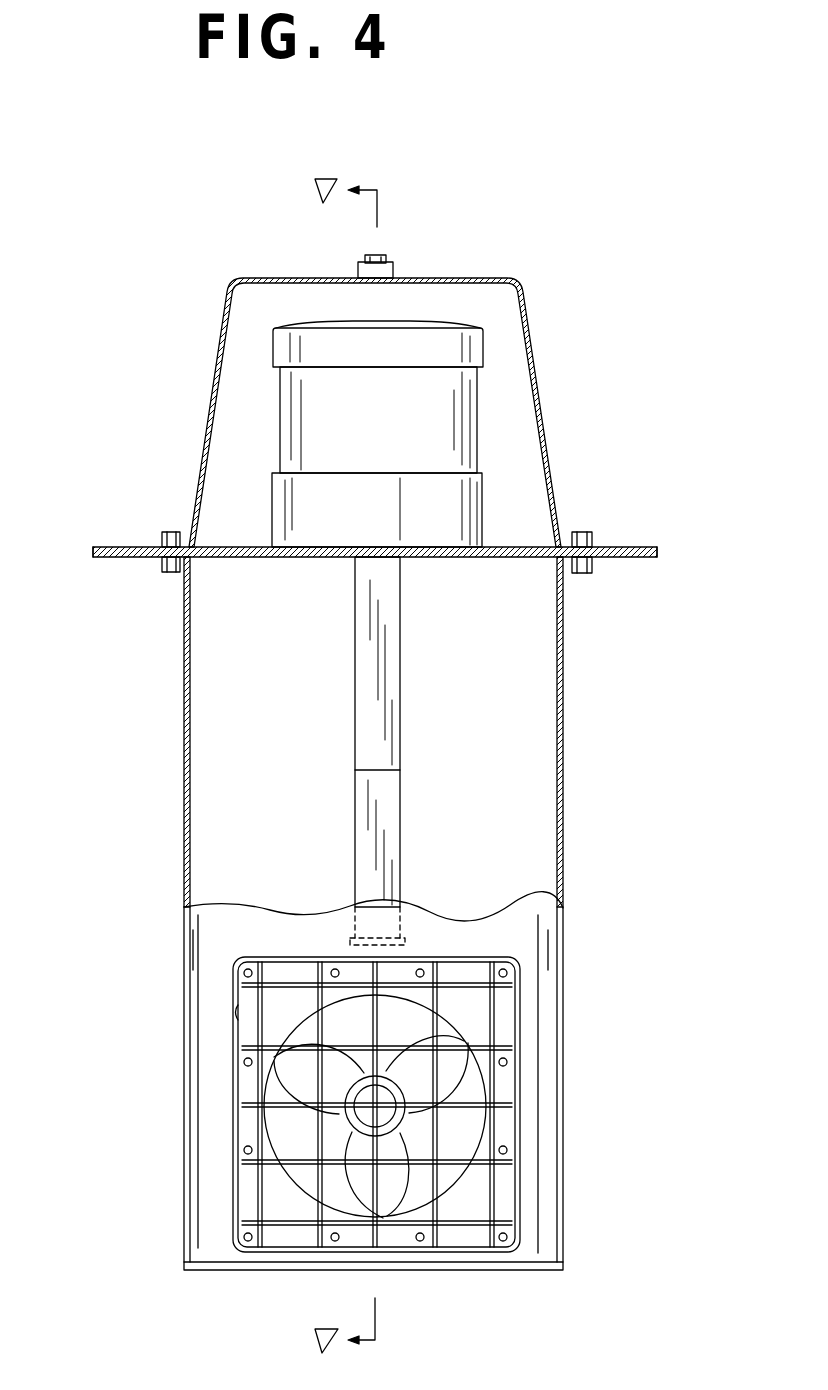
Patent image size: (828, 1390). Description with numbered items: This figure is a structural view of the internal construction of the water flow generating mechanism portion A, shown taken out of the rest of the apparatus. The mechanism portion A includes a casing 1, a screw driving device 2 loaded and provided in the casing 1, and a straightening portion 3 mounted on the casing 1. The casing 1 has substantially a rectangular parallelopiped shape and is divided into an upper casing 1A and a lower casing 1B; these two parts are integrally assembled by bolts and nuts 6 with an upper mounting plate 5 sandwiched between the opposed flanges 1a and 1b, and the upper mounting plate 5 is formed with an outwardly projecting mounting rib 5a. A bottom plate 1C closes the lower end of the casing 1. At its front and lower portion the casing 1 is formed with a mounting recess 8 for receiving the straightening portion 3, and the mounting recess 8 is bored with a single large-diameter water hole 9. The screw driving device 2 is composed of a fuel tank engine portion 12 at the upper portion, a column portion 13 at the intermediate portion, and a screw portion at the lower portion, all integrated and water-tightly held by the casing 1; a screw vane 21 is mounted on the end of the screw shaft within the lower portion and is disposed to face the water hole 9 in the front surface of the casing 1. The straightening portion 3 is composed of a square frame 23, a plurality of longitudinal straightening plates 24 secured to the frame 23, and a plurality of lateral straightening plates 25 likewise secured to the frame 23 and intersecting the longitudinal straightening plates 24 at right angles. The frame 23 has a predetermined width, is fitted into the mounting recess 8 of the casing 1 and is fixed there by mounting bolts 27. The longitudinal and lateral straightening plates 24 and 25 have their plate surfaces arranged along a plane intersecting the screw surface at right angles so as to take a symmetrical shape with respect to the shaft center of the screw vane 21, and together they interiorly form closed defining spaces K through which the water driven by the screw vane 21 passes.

The water flow generating mechanism portion A is at (123, 418).
The casing 1 is at (548, 403).
The upper casing 1A is at (203, 417).
The lower casing 1B is at (185, 778).
The bottom plate 1C is at (232, 1268).
The flange 1a is at (590, 542).
The flange 1b is at (594, 574).
The upper mounting plate 5 is at (242, 558).
The mounting rib 5a is at (106, 546).
The bolts and nuts 6 is at (170, 531).
The fuel tank engine portion 12 is at (398, 447).
The screw driving device 2 is at (400, 709).
The column portion 13 is at (357, 692).
The straightening portion 3 is at (238, 1091).
The square frame 23 is at (247, 1188).
The mounting recess 8 is at (245, 1025).
The mounting bolts 27 is at (504, 958).
The water hole 9 is at (450, 1028).
The longitudinal straightening plates 24 is at (365, 1012).
The screw vane 21 is at (458, 1073).
The lateral straightening plates 25 is at (445, 1215).
The closed defining spaces K is at (475, 1193).